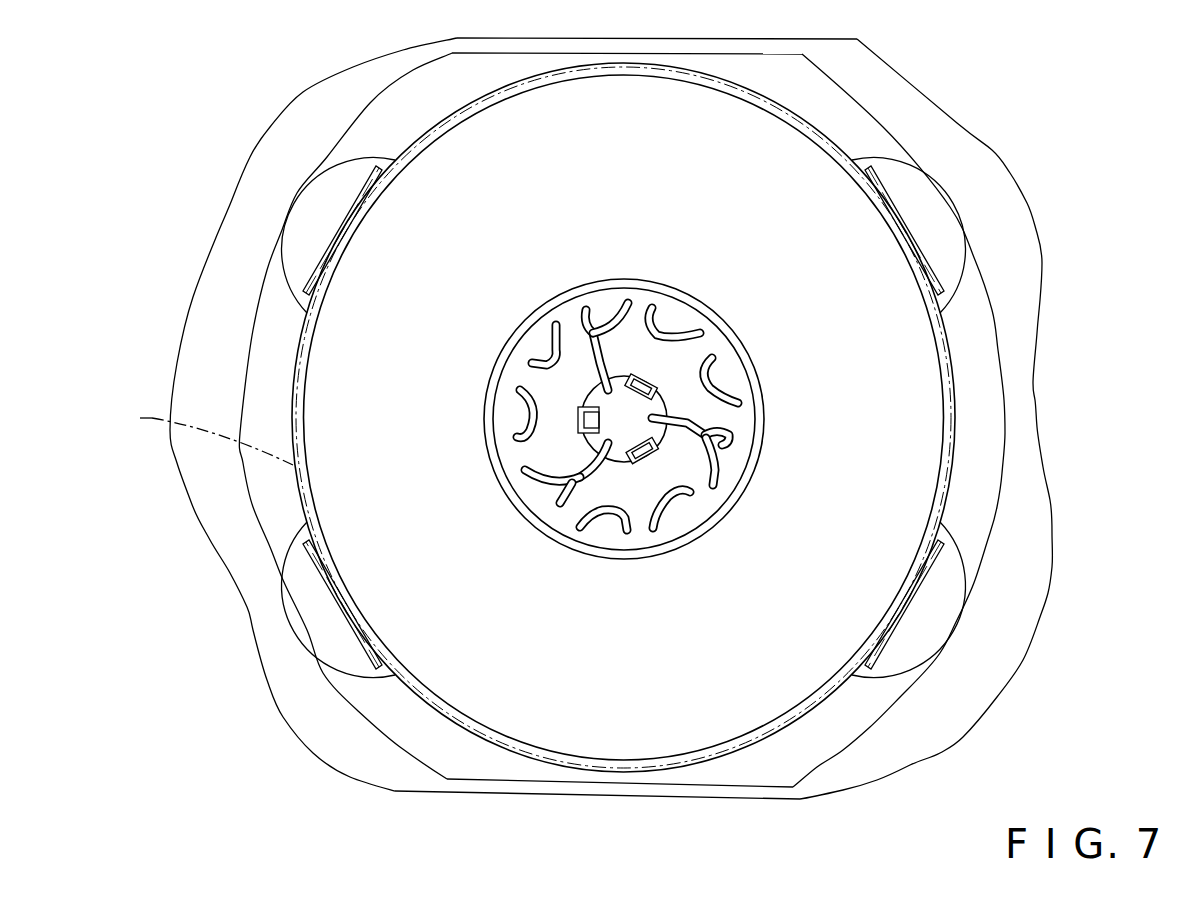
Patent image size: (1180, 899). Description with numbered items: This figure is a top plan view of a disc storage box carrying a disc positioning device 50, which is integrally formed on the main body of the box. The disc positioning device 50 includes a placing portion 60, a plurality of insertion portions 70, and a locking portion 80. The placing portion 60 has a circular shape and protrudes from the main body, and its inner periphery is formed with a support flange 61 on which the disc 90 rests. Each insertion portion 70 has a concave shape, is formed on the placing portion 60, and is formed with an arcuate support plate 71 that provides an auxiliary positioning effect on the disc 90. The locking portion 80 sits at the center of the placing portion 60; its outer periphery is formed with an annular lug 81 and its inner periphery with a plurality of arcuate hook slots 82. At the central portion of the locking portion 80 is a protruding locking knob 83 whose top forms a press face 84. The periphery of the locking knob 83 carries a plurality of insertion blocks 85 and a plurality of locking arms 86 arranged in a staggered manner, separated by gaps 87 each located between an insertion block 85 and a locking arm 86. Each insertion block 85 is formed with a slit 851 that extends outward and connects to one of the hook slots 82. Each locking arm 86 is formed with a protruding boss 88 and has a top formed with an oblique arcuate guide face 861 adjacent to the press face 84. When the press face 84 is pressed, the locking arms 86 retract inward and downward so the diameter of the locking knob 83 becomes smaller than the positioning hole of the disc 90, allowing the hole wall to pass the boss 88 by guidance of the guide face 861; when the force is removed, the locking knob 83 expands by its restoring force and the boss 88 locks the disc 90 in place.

The disc positioning device 50 is at (182, 267).
The placing portion 60 is at (400, 107).
The support flange 61 is at (297, 413).
The insertion portions 70 is at (302, 227).
The arcuate support plate 71 is at (350, 193).
The locking portion 80 is at (905, 132).
The annular lug 81 is at (762, 423).
The arcuate hook slots 82 is at (713, 458).
The locking knob 83 is at (623, 473).
The press face 84 is at (620, 420).
The insertion blocks 85 is at (700, 396).
The slit 851 is at (583, 467).
The locking arms 86 is at (663, 403).
The oblique arcuate guide face 861 is at (660, 452).
The gaps 87 is at (623, 382).
The protruding boss 88 is at (654, 384).
The disc 90 is at (198, 434).